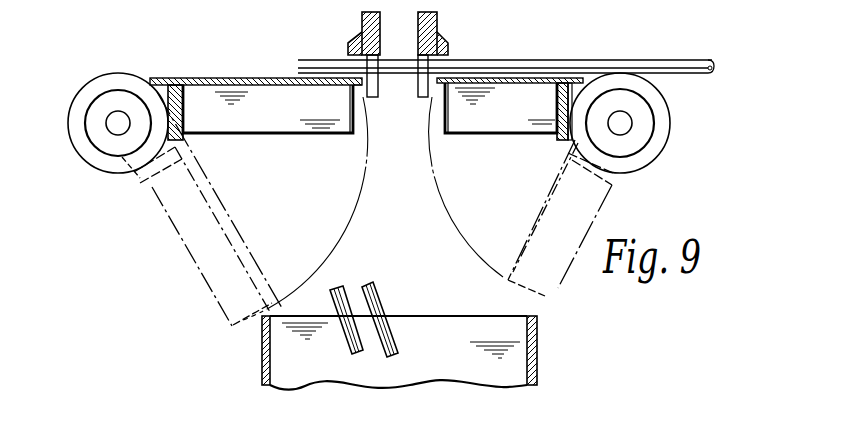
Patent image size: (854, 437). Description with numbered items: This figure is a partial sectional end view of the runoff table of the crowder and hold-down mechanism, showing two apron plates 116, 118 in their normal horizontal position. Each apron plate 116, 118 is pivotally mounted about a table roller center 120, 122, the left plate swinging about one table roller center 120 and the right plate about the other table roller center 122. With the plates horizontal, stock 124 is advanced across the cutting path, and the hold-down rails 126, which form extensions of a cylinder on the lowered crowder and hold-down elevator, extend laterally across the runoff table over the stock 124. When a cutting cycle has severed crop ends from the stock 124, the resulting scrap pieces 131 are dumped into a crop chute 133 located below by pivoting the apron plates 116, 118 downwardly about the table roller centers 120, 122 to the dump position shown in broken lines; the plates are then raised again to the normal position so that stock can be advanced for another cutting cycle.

The apron plate 116 is at (285, 87).
The apron plate 118 is at (521, 84).
The table roller center 120 is at (110, 127).
The table roller center 122 is at (630, 125).
The stock 124 is at (577, 64).
The hold-down rails 126 is at (362, 21).
The scrap pieces 131 is at (343, 288).
The crop chute 133 is at (262, 367).